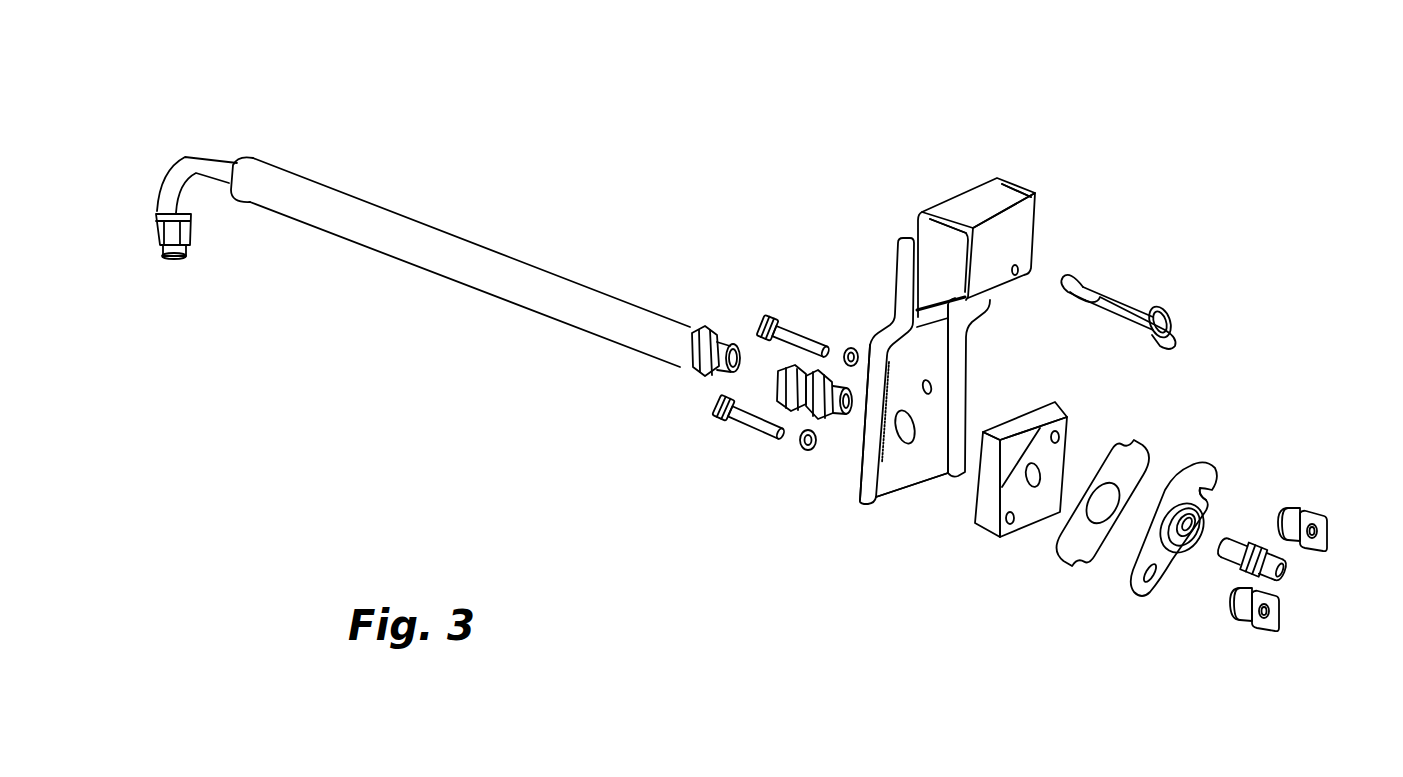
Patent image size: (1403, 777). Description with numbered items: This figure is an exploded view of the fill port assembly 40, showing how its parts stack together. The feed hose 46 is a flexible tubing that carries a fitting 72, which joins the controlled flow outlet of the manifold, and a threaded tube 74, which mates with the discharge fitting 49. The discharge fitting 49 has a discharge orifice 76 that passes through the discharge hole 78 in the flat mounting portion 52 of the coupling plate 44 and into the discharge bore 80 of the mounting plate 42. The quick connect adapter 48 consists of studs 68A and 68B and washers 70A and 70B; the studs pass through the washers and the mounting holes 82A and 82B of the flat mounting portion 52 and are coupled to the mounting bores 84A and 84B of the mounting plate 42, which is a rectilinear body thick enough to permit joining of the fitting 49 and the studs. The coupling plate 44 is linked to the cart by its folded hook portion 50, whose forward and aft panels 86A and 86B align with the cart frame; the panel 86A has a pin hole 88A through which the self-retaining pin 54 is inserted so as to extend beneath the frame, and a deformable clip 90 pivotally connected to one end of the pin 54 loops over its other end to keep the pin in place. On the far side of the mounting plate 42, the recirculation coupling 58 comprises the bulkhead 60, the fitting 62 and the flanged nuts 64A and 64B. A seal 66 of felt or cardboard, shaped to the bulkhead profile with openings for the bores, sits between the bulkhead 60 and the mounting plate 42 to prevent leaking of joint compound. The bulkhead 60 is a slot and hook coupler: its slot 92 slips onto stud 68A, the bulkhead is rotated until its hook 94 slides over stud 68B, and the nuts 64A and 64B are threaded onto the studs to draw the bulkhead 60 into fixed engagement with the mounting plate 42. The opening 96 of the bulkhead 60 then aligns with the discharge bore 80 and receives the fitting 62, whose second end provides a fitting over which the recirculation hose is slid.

The fill port assembly 40 is at (1166, 100).
The mounting plate 42 is at (985, 515).
The coupling plate 44 is at (895, 255).
The feed hose 46 is at (464, 300).
The quick connect adapter 48 is at (728, 444).
The discharge fitting 49 is at (778, 372).
The folded hook portion 50 is at (975, 205).
The flat mounting portion 52 is at (912, 457).
The self-retaining pin 54 is at (1130, 308).
The recirculation coupling 58 is at (1228, 455).
The bulkhead 60 is at (1166, 565).
The fitting 62 is at (1288, 568).
The nut 64A is at (1262, 630).
The nut 64B is at (1308, 520).
The seal 66 is at (1102, 562).
The stud 68A is at (760, 430).
The stud 68B is at (800, 335).
The washer 70A is at (806, 452).
The washer 70B is at (860, 347).
The fitting 72 is at (152, 237).
The threaded tube 74 is at (712, 370).
The discharge orifice 76 is at (834, 362).
The discharge hole 78 is at (918, 425).
The discharge bore 80 is at (1036, 486).
The mounting hole 82A is at (880, 498).
The mounting hole 82B is at (932, 384).
The mounting bore 84A is at (1012, 524).
The mounting bore 84B is at (1060, 440).
The forward panel 86A is at (1025, 233).
The aft panel 86B is at (940, 235).
The pin hole 88A is at (1020, 270).
The deformable clip 90 is at (1172, 338).
The slot 92 is at (1152, 583).
The hook 94 is at (1205, 492).
The opening 96 is at (1190, 545).